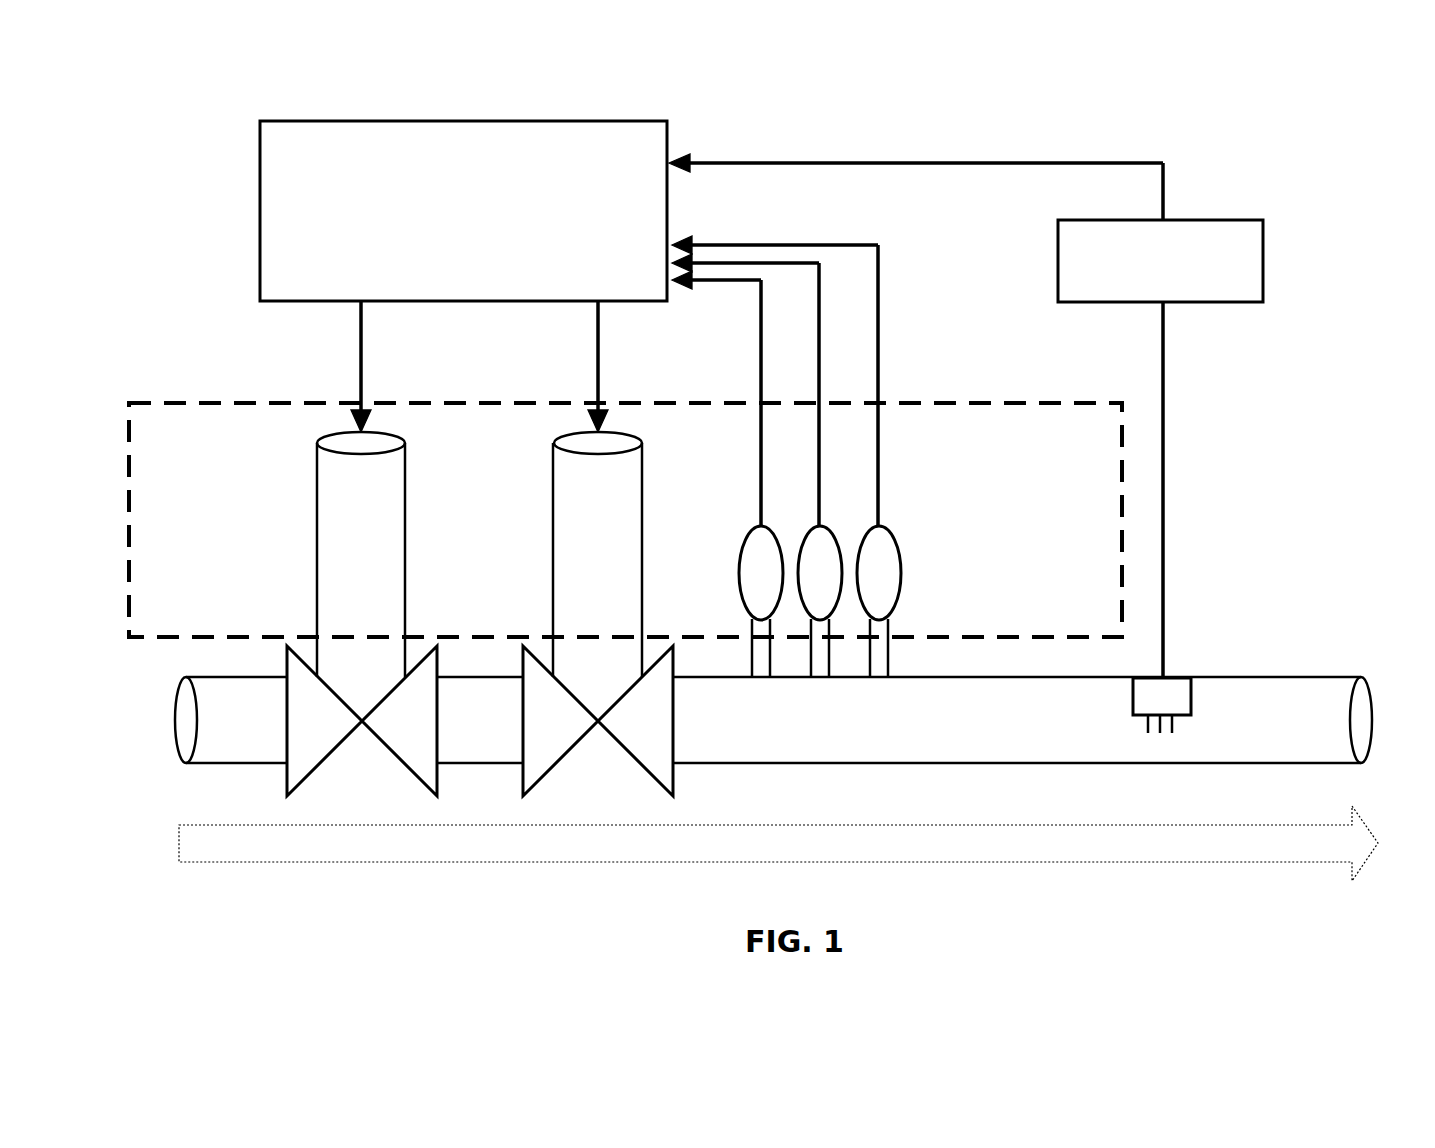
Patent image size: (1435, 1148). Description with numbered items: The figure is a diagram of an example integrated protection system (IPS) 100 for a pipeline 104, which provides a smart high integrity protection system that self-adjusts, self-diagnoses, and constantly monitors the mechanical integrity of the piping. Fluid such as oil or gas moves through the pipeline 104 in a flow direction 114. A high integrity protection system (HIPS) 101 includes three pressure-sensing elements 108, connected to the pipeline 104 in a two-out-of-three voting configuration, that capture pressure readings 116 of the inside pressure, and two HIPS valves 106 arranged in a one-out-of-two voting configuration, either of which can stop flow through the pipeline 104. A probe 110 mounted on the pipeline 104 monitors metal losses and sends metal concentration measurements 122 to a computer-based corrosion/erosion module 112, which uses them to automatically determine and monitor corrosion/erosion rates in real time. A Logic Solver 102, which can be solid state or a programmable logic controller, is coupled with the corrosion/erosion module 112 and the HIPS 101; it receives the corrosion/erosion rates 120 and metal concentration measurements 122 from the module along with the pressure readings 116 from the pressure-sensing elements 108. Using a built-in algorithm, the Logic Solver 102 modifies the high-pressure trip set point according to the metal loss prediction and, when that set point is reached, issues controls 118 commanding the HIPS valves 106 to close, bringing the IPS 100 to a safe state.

The integrated protection system 100 is at (160, 92).
The high integrity protection system 101 is at (625, 520).
The logic solver 102 is at (463, 211).
The pipeline 104 is at (773, 720).
The HIPS valves 106 is at (553, 575).
The pressure-sensing elements 108 is at (908, 647).
The probe 110 is at (1416, 624).
The corrosion/erosion module 112 is at (1160, 261).
The flow direction 114 is at (778, 843).
The pressure readings 116 is at (765, 381).
The controls 118 is at (598, 345).
The corrosion/erosion rates 120 is at (916, 152).
The metal concentration measurements 122 is at (1046, 420).